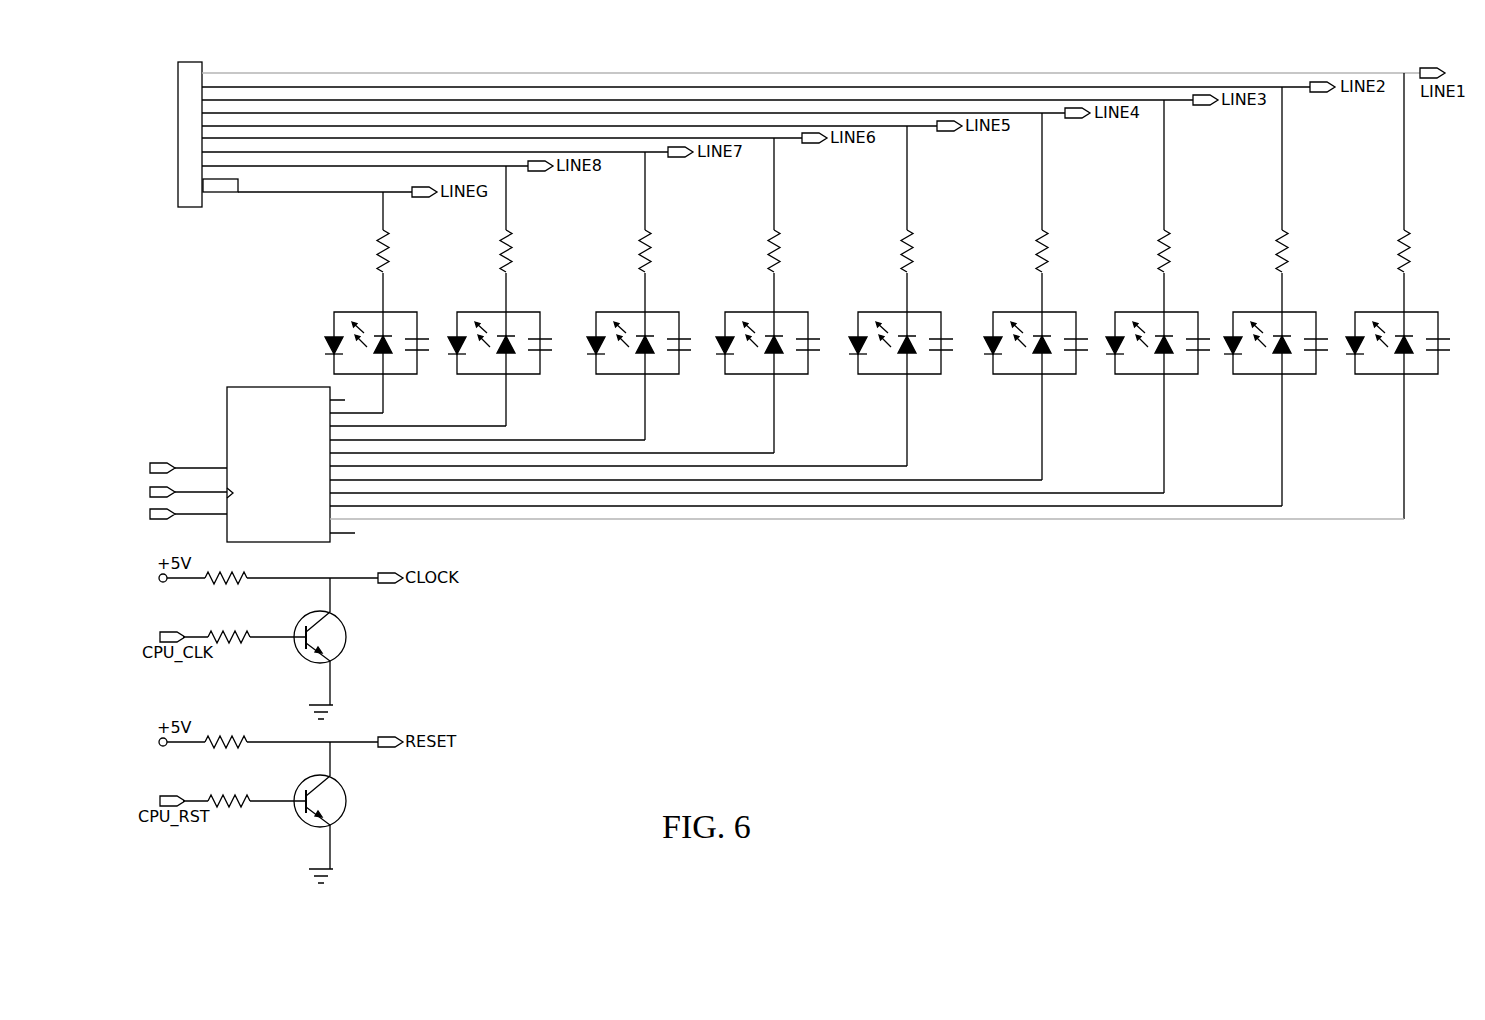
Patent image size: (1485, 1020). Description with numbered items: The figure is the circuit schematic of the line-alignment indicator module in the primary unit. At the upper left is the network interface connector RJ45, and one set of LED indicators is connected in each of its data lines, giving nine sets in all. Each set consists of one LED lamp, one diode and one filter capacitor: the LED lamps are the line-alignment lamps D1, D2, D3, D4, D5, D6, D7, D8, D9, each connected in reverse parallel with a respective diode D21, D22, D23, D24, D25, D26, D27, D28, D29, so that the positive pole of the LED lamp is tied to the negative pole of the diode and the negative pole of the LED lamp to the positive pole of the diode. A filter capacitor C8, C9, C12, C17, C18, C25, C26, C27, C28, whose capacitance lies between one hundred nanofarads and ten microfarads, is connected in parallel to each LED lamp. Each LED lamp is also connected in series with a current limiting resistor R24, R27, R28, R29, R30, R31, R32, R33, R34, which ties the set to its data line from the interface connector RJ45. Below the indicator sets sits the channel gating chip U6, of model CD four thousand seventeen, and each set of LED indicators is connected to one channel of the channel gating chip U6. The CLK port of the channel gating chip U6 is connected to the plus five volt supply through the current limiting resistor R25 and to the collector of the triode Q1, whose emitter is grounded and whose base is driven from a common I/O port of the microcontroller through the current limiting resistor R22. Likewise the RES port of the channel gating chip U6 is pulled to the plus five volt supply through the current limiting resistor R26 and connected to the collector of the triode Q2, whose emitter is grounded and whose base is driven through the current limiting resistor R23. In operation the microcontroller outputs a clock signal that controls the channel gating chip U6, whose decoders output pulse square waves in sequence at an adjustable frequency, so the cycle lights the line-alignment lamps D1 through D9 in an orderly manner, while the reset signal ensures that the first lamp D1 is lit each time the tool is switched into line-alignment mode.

The RJ-45 interface RJ45 is at (207, 124).
The channel gating chip U6 is at (747, 473).
The triode Q1 is at (348, 665).
The triode Q2 is at (348, 829).
The current limiting resistor R22 is at (247, 651).
The current limiting resistor R23 is at (253, 816).
The current limiting resistor R24 is at (1428, 253).
The current limiting resistor R25 is at (242, 591).
The current limiting resistor R26 is at (242, 755).
The current limiting resistor R27 is at (1306, 253).
The current limiting resistor R28 is at (1192, 253).
The current limiting resistor R29 is at (1066, 253).
The current limiting resistor R30 is at (932, 253).
The current limiting resistor R31 is at (800, 253).
The current limiting resistor R32 is at (671, 253).
The current limiting resistor R33 is at (536, 253).
The current limiting resistor R34 is at (409, 253).
The LED lamp D1 is at (1390, 319).
The LED lamp D2 is at (1268, 319).
The LED lamp D3 is at (1150, 319).
The LED lamp D4 is at (1028, 319).
The LED lamp D5 is at (893, 319).
The LED lamp D6 is at (760, 319).
The LED lamp D7 is at (631, 319).
The LED lamp D8 is at (492, 319).
The LED lamp D9 is at (369, 319).
The diode D21 is at (1361, 369).
The diode D22 is at (1241, 369).
The diode D23 is at (1124, 369).
The diode D24 is at (999, 369).
The diode D25 is at (867, 369).
The diode D26 is at (729, 369).
The diode D27 is at (593, 369).
The diode D28 is at (465, 369).
The diode D29 is at (313, 348).
The filter capacitor C8 is at (1439, 377).
The filter capacitor C9 is at (1319, 377).
The filter capacitor C12 is at (1196, 377).
The filter capacitor C17 is at (1076, 377).
The filter capacitor C18 is at (939, 377).
The filter capacitor C25 is at (813, 377).
The filter capacitor C26 is at (674, 377).
The filter capacitor C27 is at (541, 377).
The filter capacitor C28 is at (416, 377).